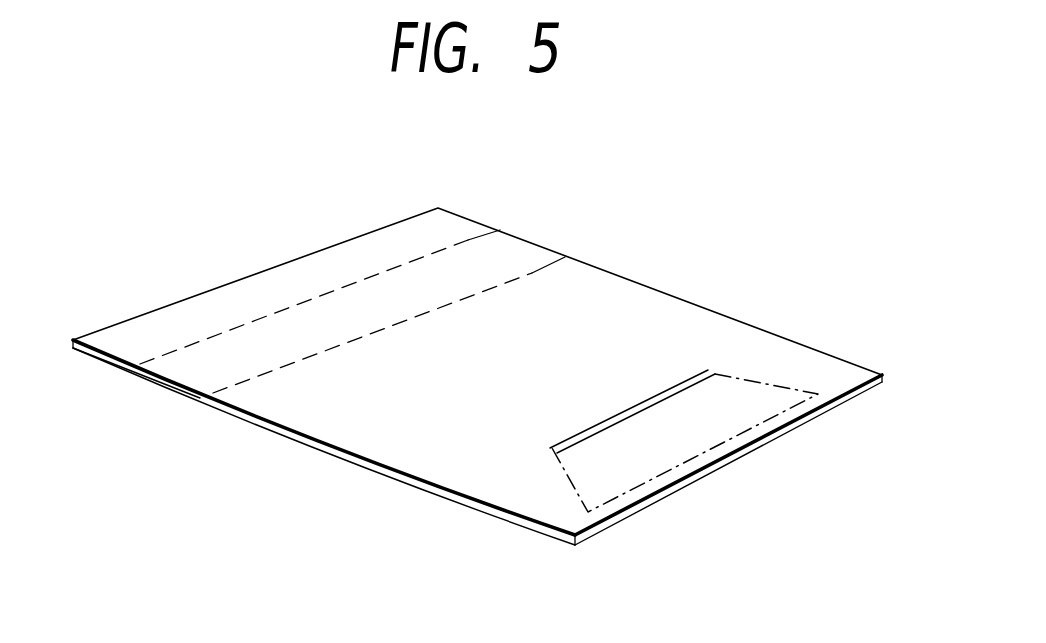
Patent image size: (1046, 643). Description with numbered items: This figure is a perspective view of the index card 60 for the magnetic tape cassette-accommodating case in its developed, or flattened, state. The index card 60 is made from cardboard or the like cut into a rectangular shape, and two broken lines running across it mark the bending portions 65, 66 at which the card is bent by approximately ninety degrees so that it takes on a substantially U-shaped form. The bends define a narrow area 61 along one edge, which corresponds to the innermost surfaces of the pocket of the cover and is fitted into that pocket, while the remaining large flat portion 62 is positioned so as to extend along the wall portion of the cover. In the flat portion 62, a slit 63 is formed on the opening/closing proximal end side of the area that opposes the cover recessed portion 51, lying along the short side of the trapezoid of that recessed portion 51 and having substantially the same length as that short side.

The index card 60 is at (536, 190).
The cover recessed portion 51 is at (730, 438).
The narrow area 61 is at (202, 409).
The flat portion 62 is at (727, 322).
The slit 63 is at (604, 422).
The bending portion 65 is at (468, 240).
The bending portion 66 is at (532, 273).